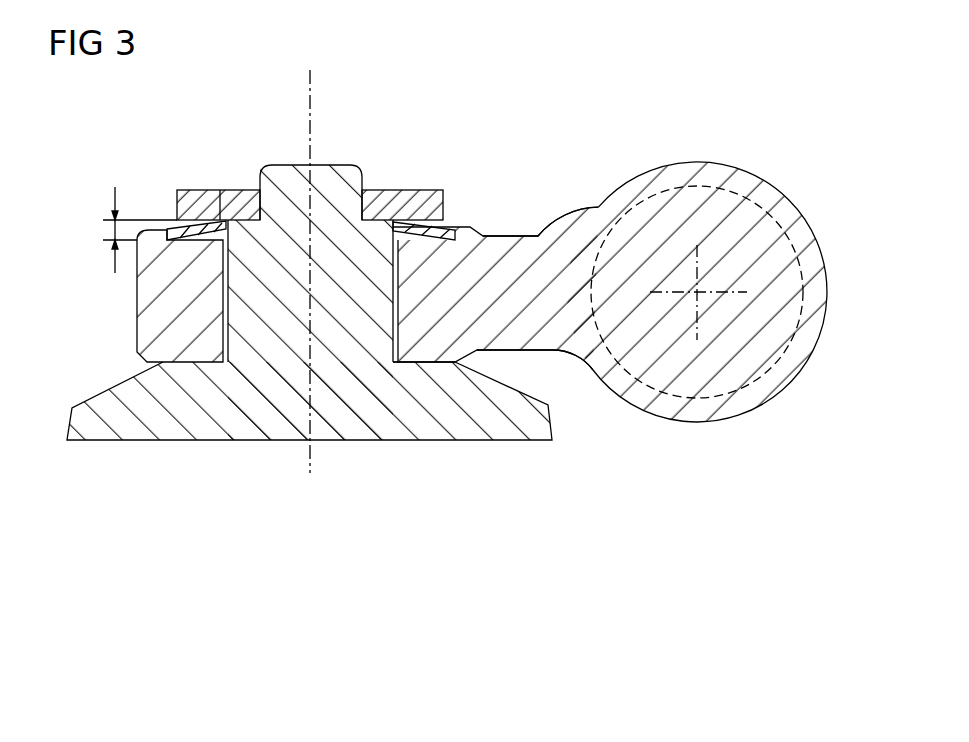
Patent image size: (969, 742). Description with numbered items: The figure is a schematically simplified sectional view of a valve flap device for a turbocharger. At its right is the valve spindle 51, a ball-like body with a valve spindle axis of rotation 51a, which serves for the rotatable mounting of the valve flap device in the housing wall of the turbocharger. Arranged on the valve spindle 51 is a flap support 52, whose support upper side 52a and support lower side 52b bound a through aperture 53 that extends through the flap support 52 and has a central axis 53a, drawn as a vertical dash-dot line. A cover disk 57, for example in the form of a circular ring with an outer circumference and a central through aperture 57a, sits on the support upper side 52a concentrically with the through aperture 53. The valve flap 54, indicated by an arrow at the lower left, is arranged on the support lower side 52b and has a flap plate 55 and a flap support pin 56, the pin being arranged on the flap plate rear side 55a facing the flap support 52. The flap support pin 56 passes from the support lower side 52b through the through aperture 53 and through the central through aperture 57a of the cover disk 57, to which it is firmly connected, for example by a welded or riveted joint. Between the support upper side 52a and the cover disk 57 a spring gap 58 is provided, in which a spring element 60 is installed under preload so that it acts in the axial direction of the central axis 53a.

The valve spindle 51 is at (704, 165).
The valve spindle axis of rotation 51a is at (700, 290).
The flap support 52 is at (548, 263).
The support upper side 52a is at (503, 234).
The support lower side 52b is at (527, 352).
The through aperture 53 is at (225, 293).
The central axis 53a is at (310, 78).
The valve flap 54 is at (153, 473).
The flap plate 55 is at (246, 428).
The flap plate rear side 55a is at (425, 362).
The flap support pin 56 is at (348, 285).
The cover disk 57 is at (200, 208).
The central through aperture 57a is at (236, 210).
The spring gap 58 is at (115, 232).
The spring element 60 is at (410, 236).